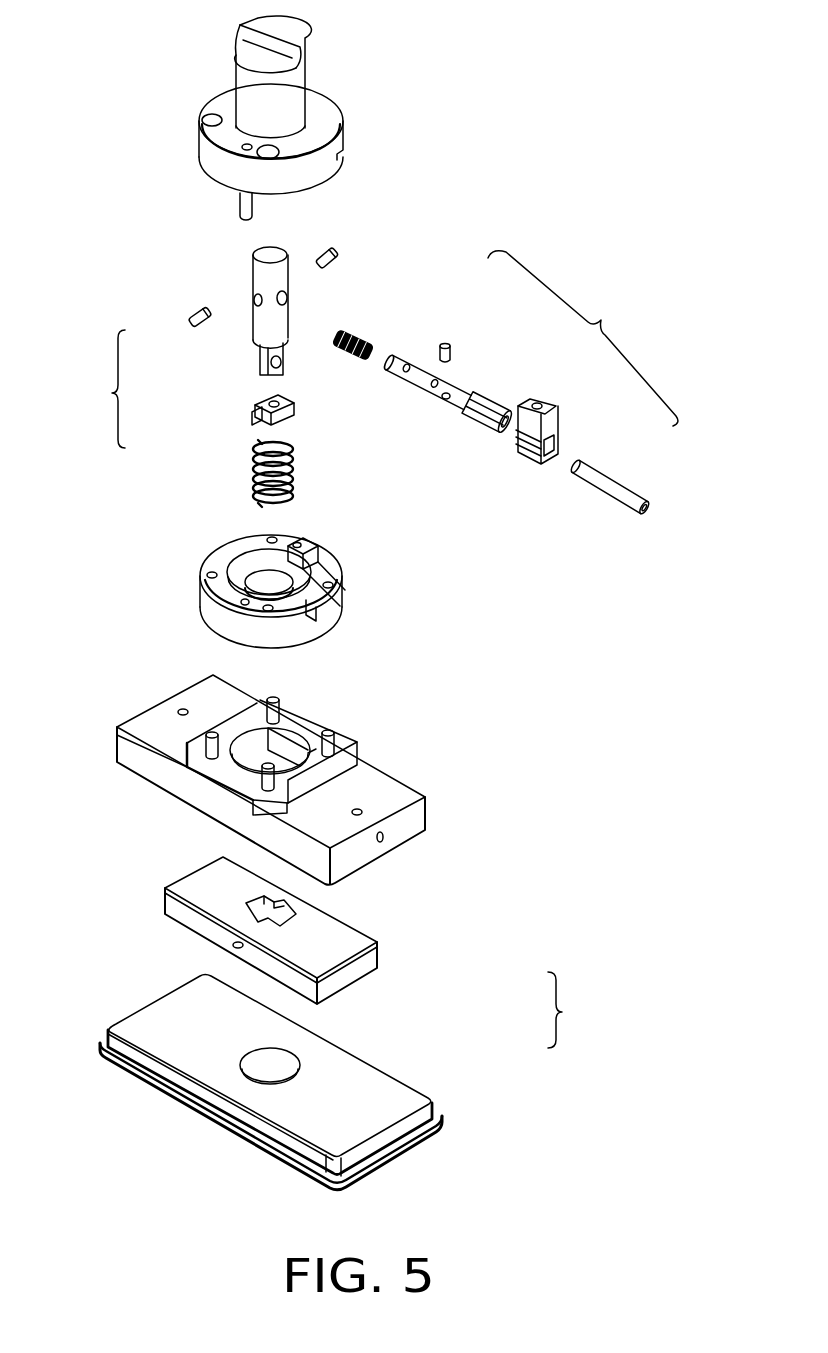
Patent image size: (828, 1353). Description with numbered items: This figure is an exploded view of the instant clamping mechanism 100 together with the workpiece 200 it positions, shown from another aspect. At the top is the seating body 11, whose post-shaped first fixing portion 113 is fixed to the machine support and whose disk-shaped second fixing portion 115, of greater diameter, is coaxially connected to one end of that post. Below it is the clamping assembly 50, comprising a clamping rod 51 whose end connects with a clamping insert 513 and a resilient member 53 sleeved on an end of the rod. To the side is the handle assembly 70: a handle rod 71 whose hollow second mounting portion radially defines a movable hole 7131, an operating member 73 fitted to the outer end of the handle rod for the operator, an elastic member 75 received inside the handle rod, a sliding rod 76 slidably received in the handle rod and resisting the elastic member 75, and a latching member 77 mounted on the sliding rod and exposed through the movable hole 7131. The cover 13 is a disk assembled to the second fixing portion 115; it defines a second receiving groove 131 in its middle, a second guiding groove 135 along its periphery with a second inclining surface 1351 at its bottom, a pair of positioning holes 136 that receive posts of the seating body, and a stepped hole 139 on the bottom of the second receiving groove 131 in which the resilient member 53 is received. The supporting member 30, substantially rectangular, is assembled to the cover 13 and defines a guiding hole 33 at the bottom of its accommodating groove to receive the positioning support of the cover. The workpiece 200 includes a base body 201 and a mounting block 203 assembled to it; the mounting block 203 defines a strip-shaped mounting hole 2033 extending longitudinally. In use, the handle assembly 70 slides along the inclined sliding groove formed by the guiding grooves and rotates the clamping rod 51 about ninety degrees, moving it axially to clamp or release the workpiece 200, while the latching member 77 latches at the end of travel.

The seating body 11 is at (273, 118).
The first fixing portion 113 is at (286, 112).
The second fixing portion 115 is at (328, 158).
The clamping assembly 50 is at (224, 377).
The clamping rod 51 is at (265, 330).
The clamping insert 513 is at (285, 418).
The resilient member 53 is at (255, 462).
The handle assembly 70 is at (505, 383).
The elastic member 75 is at (357, 338).
The latching member 77 is at (448, 346).
The handle rod 71 is at (462, 398).
The movable hole 7131 is at (445, 398).
The operating member 73 is at (543, 410).
The sliding rod 76 is at (590, 480).
The cover 13 is at (267, 569).
The stepped hole 139 is at (266, 586).
The second receiving groove 131 is at (275, 567).
The second guiding groove 135 is at (318, 575).
The second inclining surface 1351 is at (328, 598).
The positioning holes 136 is at (246, 603).
The instant clamping mechanism 100 is at (452, 676).
The supporting member 30 is at (298, 769).
The guiding hole 33 is at (253, 763).
The workpiece 200 is at (359, 1010).
The mounting block 203 is at (330, 917).
The mounting hole 2033 is at (258, 906).
The base body 201 is at (370, 1085).